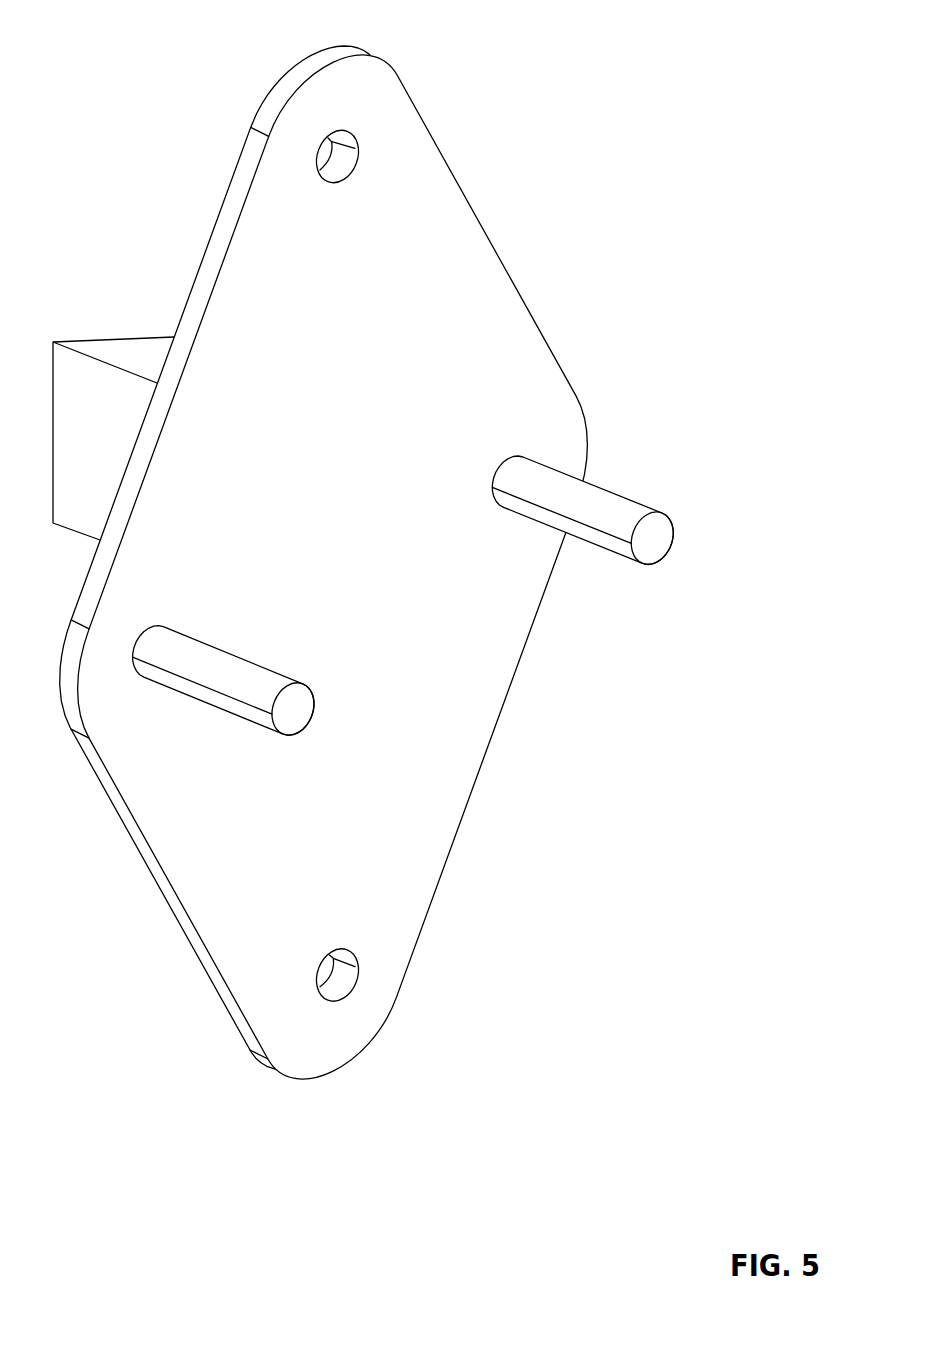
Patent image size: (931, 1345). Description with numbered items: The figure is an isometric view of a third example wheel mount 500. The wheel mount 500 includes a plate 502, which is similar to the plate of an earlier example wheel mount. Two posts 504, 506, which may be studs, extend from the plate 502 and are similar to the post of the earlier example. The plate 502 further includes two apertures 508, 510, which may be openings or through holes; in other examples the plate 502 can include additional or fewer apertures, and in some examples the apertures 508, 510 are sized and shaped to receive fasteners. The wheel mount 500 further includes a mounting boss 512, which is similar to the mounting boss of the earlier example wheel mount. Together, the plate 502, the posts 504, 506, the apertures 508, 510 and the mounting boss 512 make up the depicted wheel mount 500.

The wheel mount 500 is at (367, 543).
The plate 502 is at (483, 222).
The post 504 is at (260, 660).
The post 506 is at (540, 523).
The aperture 508 is at (330, 183).
The aperture 510 is at (340, 948).
The mounting boss 512 is at (148, 335).